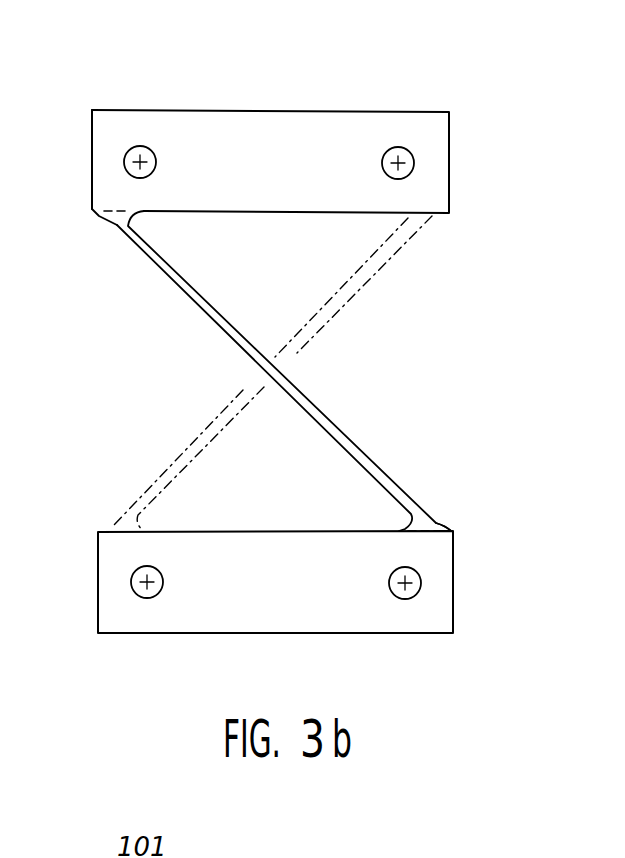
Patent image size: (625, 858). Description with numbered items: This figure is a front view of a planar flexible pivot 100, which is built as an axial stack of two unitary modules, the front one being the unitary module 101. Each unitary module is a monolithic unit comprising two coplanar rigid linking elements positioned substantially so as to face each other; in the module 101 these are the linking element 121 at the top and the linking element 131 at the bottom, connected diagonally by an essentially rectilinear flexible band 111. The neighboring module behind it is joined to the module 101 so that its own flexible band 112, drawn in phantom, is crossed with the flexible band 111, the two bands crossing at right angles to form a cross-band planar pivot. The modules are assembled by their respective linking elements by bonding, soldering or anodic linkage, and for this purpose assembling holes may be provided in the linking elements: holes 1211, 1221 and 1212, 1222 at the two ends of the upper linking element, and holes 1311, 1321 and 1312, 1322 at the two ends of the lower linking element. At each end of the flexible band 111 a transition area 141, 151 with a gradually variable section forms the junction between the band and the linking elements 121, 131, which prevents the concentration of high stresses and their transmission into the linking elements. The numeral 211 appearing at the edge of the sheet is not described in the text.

The planar flexible pivot 100 is at (307, 65).
The unitary module 101 is at (86, 190).
The flexible band 111 is at (212, 318).
The flexible band 112 is at (303, 340).
The linking element 121 is at (221, 126).
The assembling hole 1211 is at (129, 149).
The assembling hole 1221 is at (140, 162).
The assembling hole 1212 is at (407, 148).
The assembling hole 1222 is at (398, 163).
The linking element 131 is at (223, 620).
The assembling hole 1311 is at (147, 598).
The assembling hole 1321 is at (125, 663).
The assembling hole 1312 is at (410, 590).
The assembling hole 1322 is at (424, 646).
The transition area 141 is at (118, 228).
The transition area 151 is at (425, 520).
The plate 211 is at (33, 845).